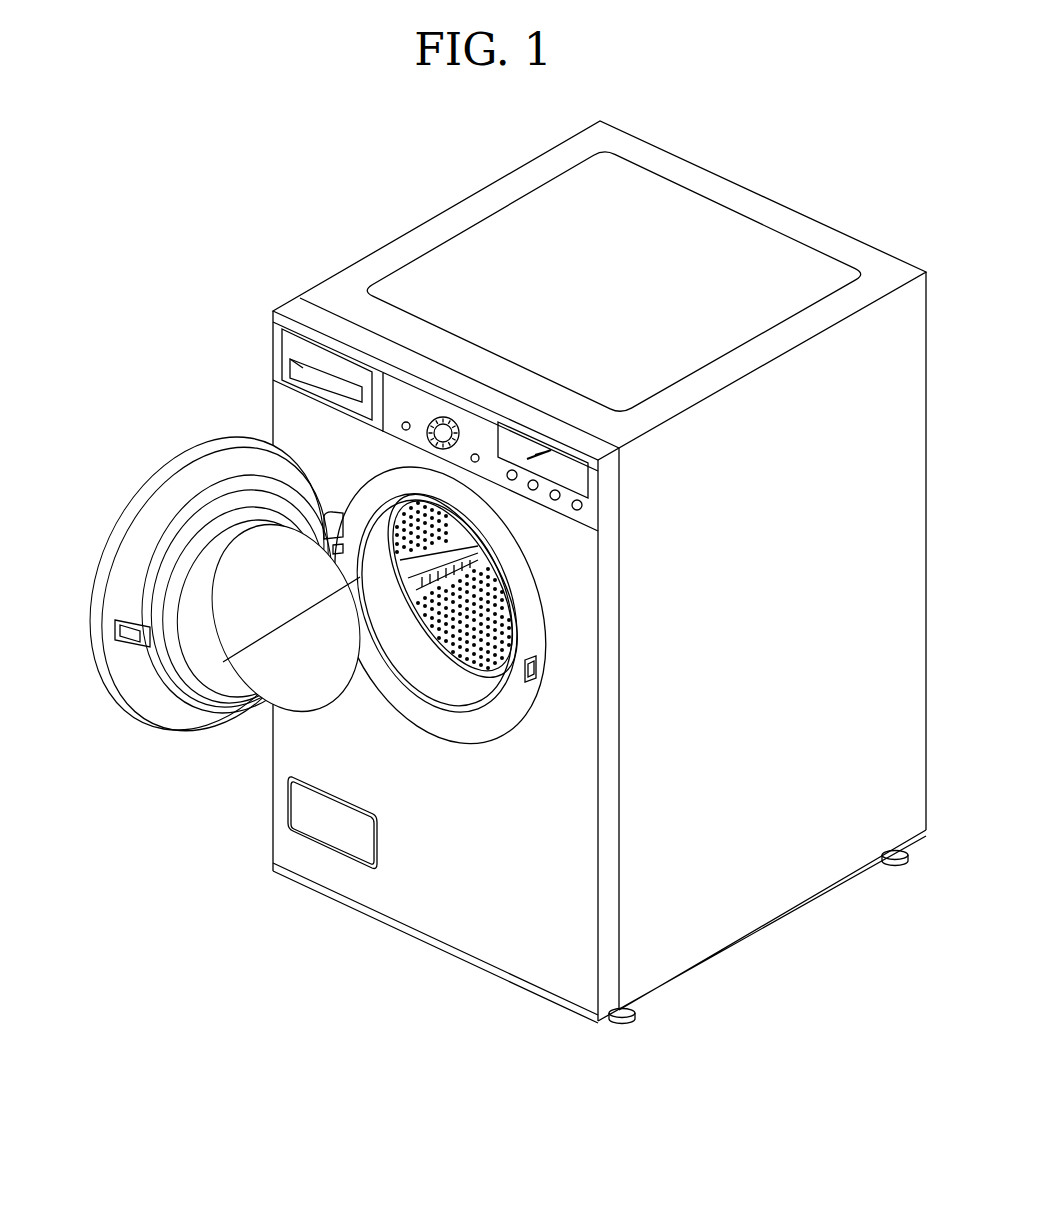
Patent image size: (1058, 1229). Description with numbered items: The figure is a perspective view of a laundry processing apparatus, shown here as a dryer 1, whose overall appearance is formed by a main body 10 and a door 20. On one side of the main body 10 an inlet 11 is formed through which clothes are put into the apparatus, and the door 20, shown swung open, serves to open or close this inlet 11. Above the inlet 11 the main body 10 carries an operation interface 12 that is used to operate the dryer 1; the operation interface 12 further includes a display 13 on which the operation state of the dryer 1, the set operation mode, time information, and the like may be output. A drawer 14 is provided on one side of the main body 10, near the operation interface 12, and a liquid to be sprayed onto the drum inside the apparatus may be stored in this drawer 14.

The dryer 1 is at (318, 250).
The main body 10 is at (457, 210).
The inlet 11 is at (463, 648).
The operation interface 12 is at (420, 393).
The display 13 is at (580, 470).
The drawer 14 is at (285, 352).
The door 20 is at (123, 518).